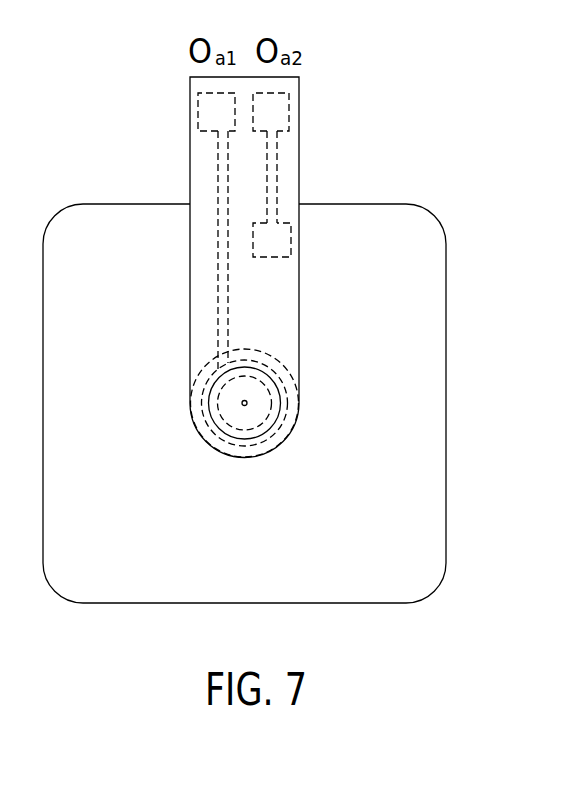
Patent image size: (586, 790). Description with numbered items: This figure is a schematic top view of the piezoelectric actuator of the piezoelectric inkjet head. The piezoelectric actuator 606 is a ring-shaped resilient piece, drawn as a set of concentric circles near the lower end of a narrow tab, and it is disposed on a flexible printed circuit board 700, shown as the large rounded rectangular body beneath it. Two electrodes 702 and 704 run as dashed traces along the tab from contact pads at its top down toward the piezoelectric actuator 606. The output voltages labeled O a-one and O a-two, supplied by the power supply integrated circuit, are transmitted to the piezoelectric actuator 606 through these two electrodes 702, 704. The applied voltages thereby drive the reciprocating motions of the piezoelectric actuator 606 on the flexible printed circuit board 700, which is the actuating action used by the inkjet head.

The flexible printed circuit board 700 is at (425, 524).
The piezoelectric actuator 606 is at (290, 416).
The electrode 702 is at (212, 116).
The electrode 704 is at (275, 117).